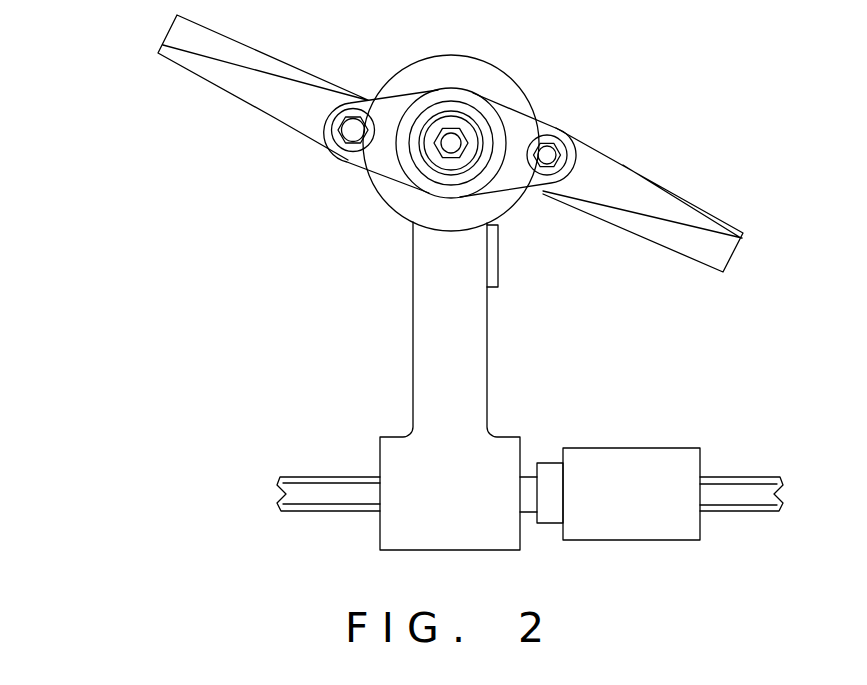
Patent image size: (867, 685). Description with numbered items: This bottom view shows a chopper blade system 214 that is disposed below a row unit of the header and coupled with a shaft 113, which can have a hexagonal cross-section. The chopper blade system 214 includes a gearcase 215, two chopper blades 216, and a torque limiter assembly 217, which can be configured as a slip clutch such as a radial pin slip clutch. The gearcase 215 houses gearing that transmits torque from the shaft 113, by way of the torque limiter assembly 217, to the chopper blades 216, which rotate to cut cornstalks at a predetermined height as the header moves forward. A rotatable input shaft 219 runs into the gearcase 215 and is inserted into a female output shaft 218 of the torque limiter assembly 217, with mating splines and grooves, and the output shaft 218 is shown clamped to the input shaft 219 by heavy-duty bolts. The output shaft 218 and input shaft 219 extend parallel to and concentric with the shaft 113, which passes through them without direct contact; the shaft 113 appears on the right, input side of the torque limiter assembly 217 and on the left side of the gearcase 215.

The chopper blade system 214 is at (140, 174).
The chopper blade 216 is at (272, 57).
The gearcase 215 is at (413, 375).
The shaft 113 is at (310, 475).
The torque limiter assembly 217 is at (657, 554).
The female output shaft 218 is at (551, 463).
The input shaft 219 is at (528, 513).